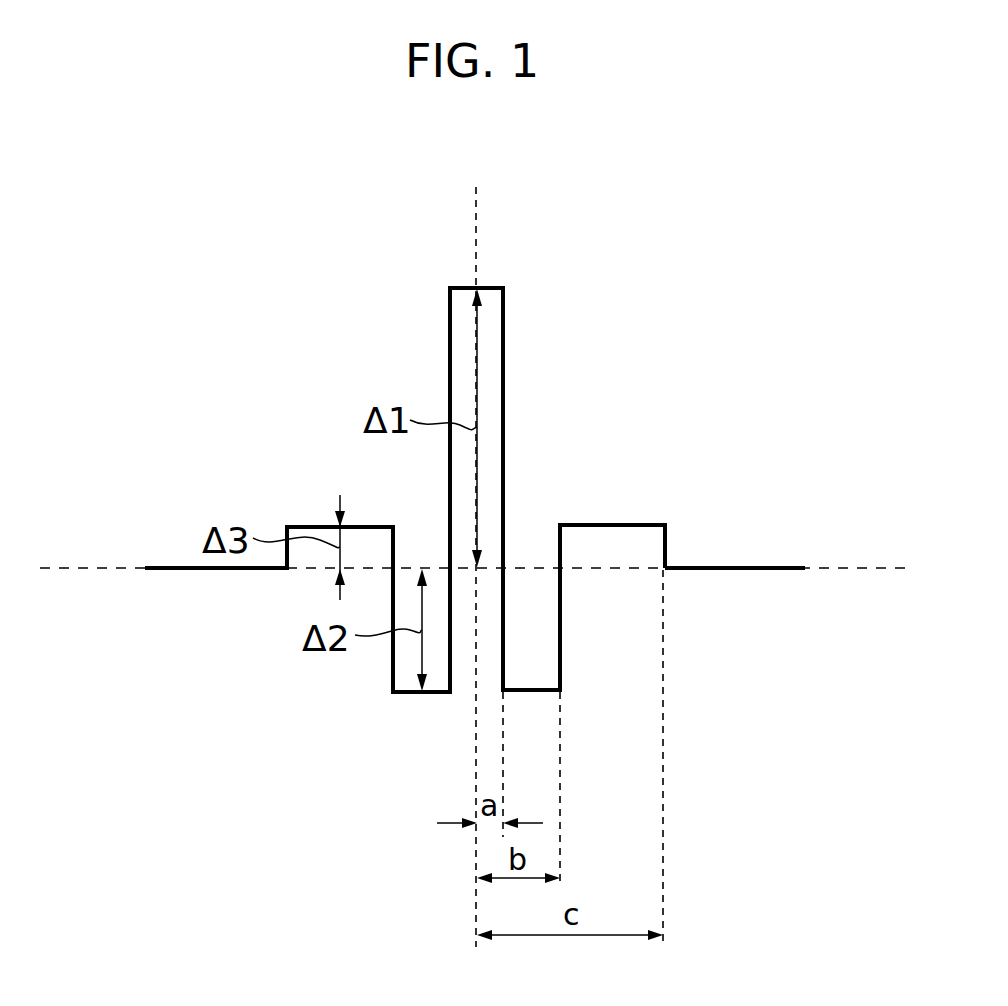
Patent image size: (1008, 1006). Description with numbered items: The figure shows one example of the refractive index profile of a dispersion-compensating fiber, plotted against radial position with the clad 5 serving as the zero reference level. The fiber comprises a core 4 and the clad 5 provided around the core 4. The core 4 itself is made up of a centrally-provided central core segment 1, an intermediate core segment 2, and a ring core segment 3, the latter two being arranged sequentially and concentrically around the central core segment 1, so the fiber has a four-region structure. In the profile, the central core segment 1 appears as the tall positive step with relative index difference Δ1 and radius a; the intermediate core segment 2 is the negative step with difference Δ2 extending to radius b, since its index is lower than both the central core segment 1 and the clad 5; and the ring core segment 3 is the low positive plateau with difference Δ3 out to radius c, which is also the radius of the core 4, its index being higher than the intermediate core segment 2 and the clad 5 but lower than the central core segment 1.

The central core segment 1 is at (491, 288).
The intermediate core segment 2 is at (531, 688).
The ring core segment 3 is at (610, 525).
The core 4 is at (557, 466).
The clad 5 is at (746, 567).